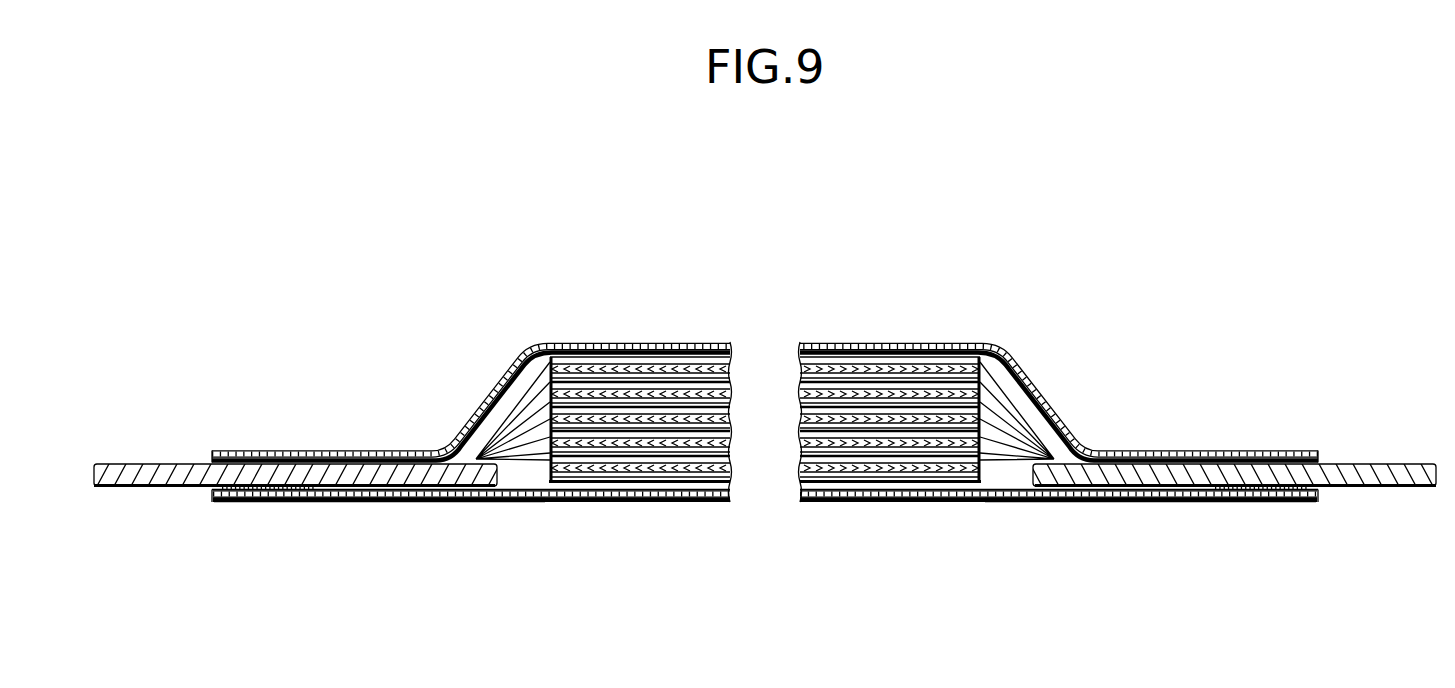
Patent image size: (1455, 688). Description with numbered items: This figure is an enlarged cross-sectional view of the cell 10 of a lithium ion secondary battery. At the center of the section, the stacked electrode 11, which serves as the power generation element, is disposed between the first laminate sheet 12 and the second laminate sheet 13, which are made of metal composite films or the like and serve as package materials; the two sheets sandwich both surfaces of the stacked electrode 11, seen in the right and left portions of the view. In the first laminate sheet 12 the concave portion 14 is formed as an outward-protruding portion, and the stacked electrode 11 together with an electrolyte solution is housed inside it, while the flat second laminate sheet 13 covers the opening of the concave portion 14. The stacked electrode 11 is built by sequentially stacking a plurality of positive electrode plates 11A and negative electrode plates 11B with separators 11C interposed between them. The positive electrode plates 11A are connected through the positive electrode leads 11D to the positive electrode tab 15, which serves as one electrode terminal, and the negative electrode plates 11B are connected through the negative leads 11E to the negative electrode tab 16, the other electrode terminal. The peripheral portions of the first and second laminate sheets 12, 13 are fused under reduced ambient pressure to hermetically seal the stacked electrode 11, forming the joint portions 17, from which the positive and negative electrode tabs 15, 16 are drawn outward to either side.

The cell 10 is at (1088, 250).
The stacked electrode 11 is at (790, 430).
The positive electrode plates 11A is at (708, 425).
The negative electrode plates 11B is at (946, 405).
The separators 11C is at (856, 398).
The positive electrode leads 11D is at (548, 405).
The negative leads 11E is at (985, 420).
The first laminate sheet 12 is at (603, 345).
The second laminate sheet 13 is at (577, 503).
The concave portion 14 is at (907, 343).
The positive electrode tab 15 is at (145, 462).
The negative electrode tab 16 is at (1385, 462).
The joint portions 17 is at (412, 502).